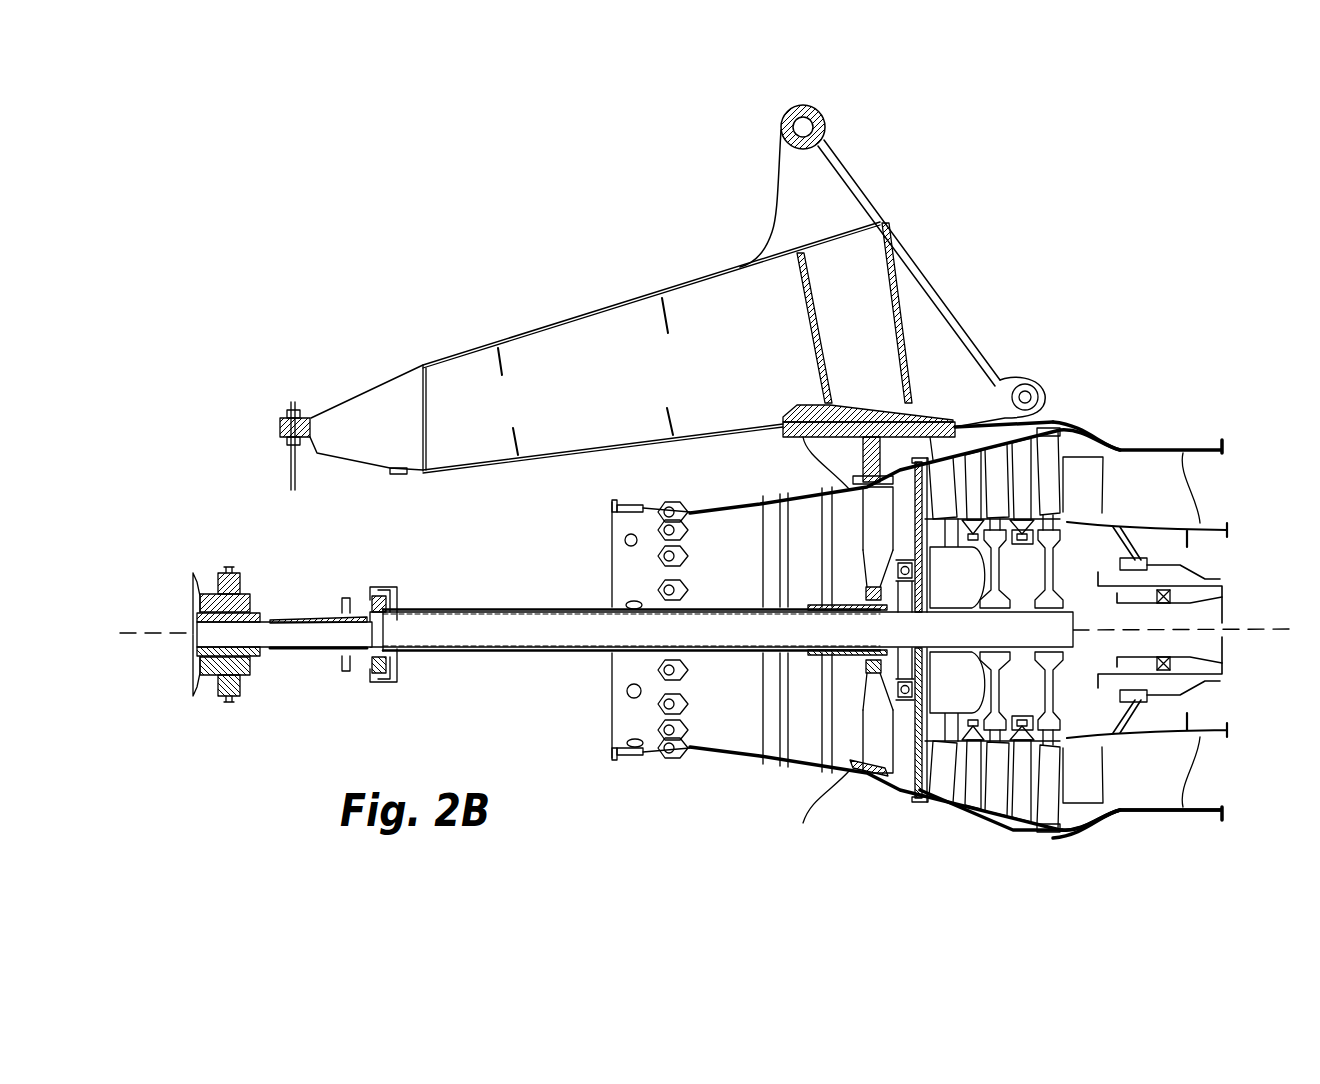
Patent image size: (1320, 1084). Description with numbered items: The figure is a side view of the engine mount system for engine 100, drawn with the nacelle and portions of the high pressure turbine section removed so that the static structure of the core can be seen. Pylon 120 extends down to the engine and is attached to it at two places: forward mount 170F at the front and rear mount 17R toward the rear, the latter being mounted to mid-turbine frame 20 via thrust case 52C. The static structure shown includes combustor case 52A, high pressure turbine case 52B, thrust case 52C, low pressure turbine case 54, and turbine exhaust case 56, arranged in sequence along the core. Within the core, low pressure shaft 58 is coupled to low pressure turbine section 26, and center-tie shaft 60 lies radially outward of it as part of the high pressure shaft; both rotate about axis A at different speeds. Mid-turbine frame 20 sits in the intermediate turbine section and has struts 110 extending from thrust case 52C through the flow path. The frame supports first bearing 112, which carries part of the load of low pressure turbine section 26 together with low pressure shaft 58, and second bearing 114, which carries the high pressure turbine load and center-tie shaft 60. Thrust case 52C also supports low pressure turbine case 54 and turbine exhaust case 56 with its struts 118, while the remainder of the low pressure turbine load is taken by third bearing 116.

The engine 100 is at (206, 472).
The pylon 120 is at (538, 316).
The forward mount 170F is at (272, 428).
The rear mount 17R is at (805, 462).
The mid-turbine frame 20 is at (1076, 475).
The low pressure turbine section 26 is at (908, 512).
The struts 118 is at (1175, 492).
The third bearing 116 is at (1175, 614).
The struts 110 is at (877, 525).
The second bearing 114 is at (855, 581).
The first bearing 112 is at (902, 600).
The low pressure shaft 58 is at (307, 615).
The center-tie shaft 60 is at (500, 606).
The combustor case 52A is at (720, 745).
The high pressure turbine case 52B is at (790, 762).
The thrust case 52C is at (858, 772).
The low pressure turbine case 54 is at (957, 807).
The turbine exhaust case 56 is at (1087, 817).
The axis A is at (152, 633).